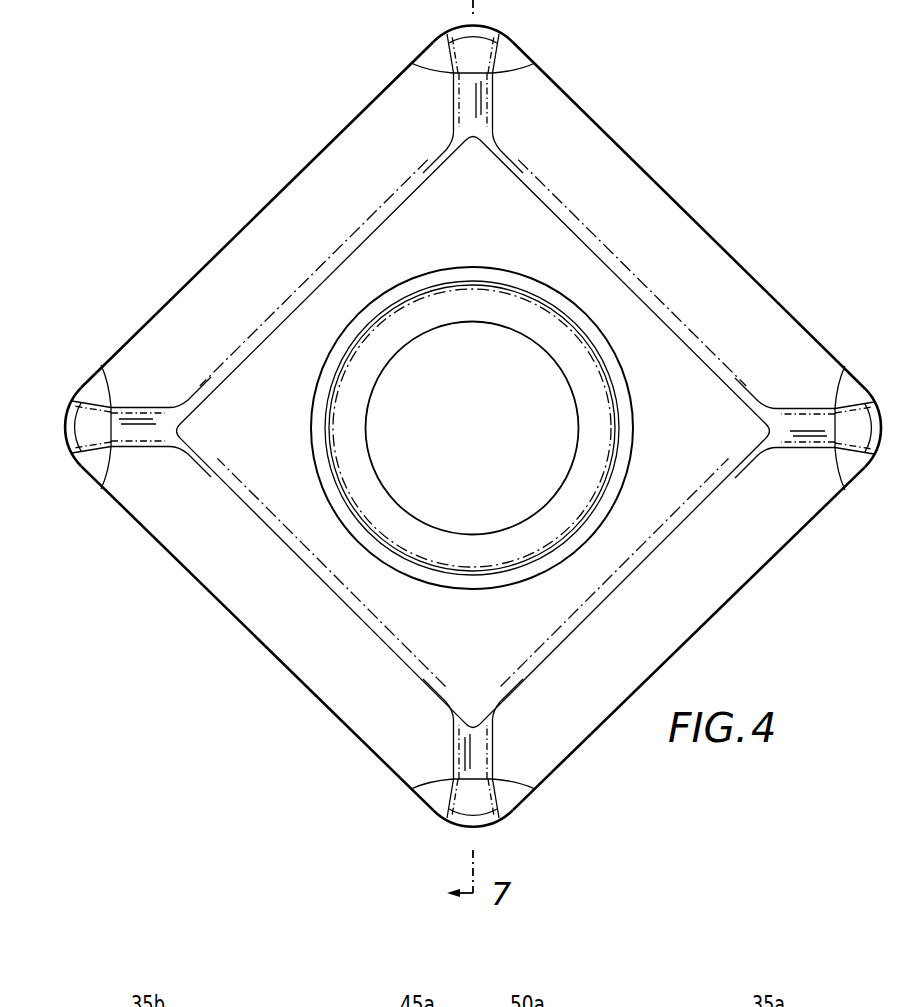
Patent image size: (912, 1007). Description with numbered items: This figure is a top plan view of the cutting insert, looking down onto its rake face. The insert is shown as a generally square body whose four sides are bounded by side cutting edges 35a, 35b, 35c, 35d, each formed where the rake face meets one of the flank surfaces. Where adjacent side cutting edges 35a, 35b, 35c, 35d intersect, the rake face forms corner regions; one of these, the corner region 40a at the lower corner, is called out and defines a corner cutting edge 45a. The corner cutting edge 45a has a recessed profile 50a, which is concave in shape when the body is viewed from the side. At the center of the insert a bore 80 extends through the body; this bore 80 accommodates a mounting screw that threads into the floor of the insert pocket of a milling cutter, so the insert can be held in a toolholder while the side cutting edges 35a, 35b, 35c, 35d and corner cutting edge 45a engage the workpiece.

The side cutting edge 35a is at (755, 578).
The side cutting edge 35b is at (224, 611).
The side cutting edge 35c is at (273, 197).
The side cutting edge 35d is at (660, 185).
The corner region 40a is at (407, 827).
The corner cutting edge 45a is at (458, 825).
The recessed profile 50a is at (492, 822).
The bore 80 is at (560, 430).